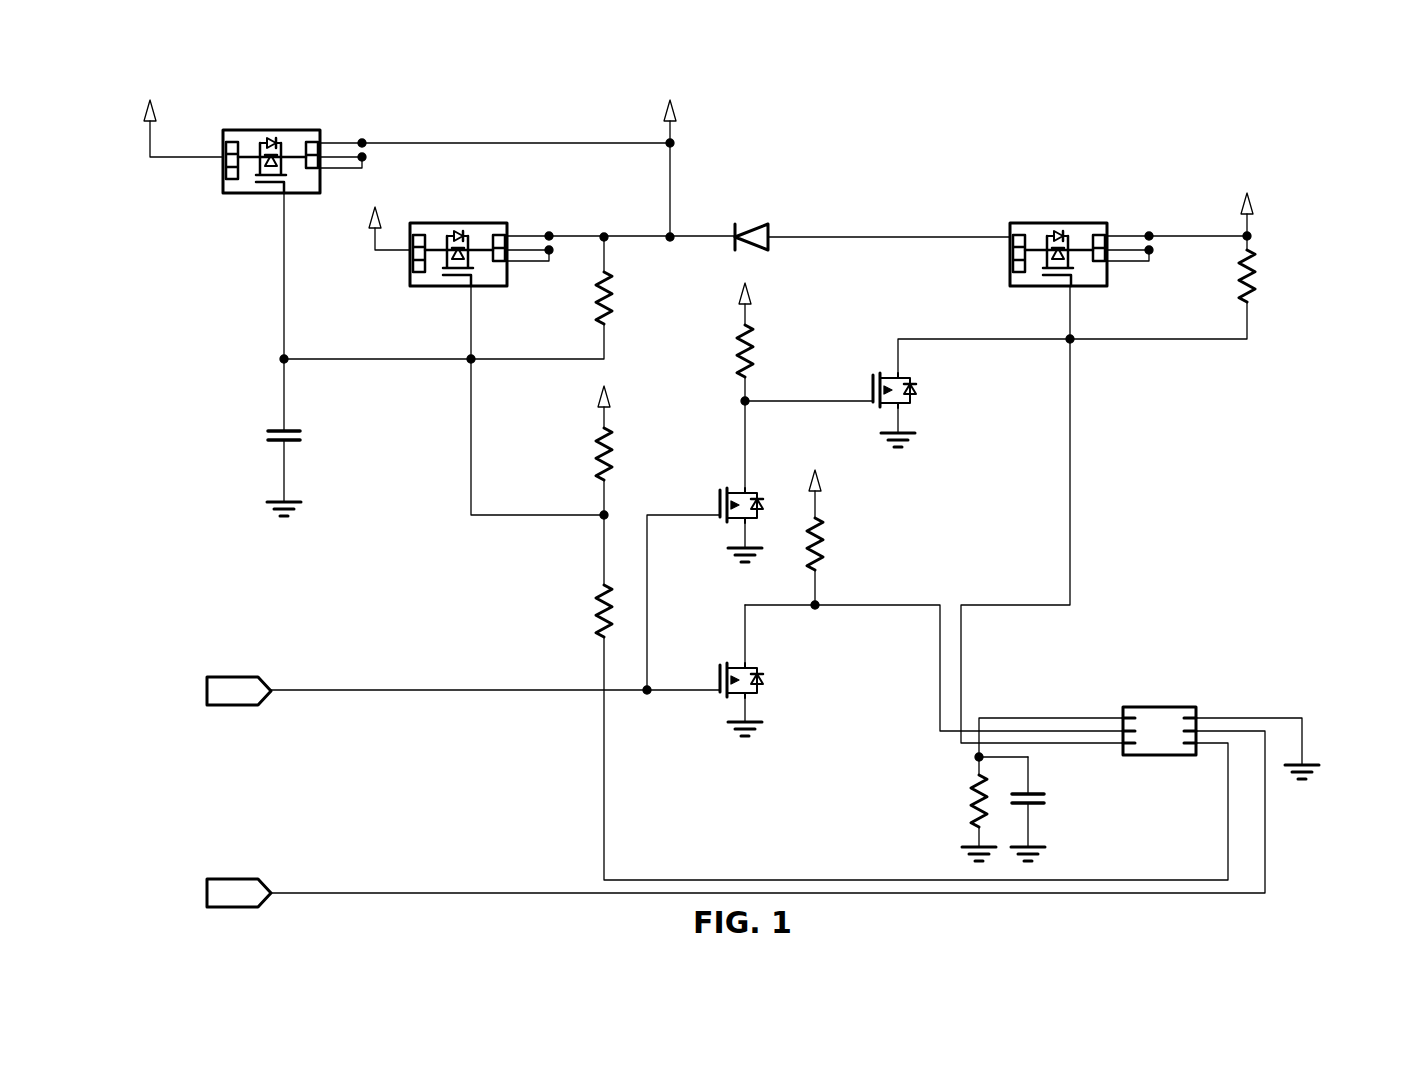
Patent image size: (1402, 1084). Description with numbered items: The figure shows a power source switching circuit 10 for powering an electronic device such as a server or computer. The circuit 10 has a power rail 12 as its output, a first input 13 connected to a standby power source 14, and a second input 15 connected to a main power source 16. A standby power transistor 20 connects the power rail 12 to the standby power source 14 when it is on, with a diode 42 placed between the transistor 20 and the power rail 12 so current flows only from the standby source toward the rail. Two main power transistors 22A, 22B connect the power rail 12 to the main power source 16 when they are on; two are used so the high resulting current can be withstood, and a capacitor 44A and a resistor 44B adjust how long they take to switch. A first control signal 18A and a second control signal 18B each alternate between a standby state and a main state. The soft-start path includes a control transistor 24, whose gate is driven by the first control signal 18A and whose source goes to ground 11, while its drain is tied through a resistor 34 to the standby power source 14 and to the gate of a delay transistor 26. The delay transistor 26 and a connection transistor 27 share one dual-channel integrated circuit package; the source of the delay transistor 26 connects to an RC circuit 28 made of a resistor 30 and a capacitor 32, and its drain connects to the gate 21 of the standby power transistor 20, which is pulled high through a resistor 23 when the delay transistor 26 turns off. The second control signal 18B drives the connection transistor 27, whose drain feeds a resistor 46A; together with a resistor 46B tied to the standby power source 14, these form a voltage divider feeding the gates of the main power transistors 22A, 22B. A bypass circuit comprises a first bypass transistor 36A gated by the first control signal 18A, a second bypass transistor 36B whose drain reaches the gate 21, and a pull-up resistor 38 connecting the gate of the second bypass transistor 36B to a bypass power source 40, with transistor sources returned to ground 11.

The power source switching circuit 10 is at (1282, 106).
The ground 11 is at (268, 502).
The power rail 12 is at (668, 106).
The first input 13 is at (1256, 235).
The standby power source 14 is at (1243, 203).
The second input 15 is at (150, 157).
The main power source 16 is at (148, 104).
The first control signal 18A is at (220, 676).
The second control signal 18B is at (220, 878).
The standby power transistor 20 is at (1020, 218).
The gate 21 is at (1074, 290).
The main power transistor 22A is at (243, 130).
The main power transistor 22B is at (487, 223).
The resistor 23 is at (1242, 296).
The control transistor 24 is at (735, 665).
The delay transistor 26 is at (1125, 706).
The connection transistor 27 is at (1190, 706).
The RC circuit 28 is at (966, 800).
The resistor 30 is at (975, 783).
The capacitor 32 is at (1045, 790).
The resistor 34 is at (825, 565).
The first bypass transistor 36A is at (735, 490).
The second bypass transistor 36B is at (915, 378).
The pull-up resistor 38 is at (740, 372).
The bypass power source 40 is at (742, 293).
The diode 42 is at (752, 222).
The capacitor 44A is at (266, 433).
The resistor 44B is at (598, 322).
The resistor 46A is at (598, 476).
The resistor 46B is at (598, 636).